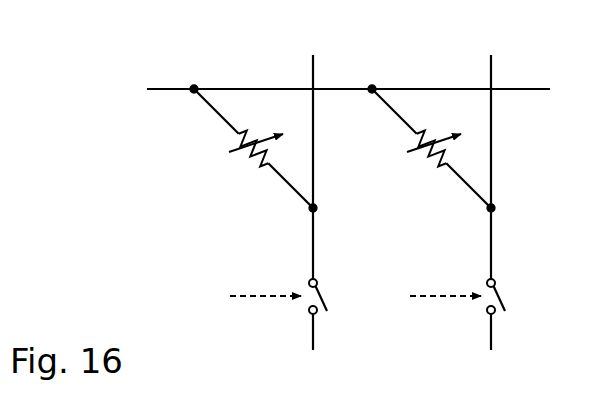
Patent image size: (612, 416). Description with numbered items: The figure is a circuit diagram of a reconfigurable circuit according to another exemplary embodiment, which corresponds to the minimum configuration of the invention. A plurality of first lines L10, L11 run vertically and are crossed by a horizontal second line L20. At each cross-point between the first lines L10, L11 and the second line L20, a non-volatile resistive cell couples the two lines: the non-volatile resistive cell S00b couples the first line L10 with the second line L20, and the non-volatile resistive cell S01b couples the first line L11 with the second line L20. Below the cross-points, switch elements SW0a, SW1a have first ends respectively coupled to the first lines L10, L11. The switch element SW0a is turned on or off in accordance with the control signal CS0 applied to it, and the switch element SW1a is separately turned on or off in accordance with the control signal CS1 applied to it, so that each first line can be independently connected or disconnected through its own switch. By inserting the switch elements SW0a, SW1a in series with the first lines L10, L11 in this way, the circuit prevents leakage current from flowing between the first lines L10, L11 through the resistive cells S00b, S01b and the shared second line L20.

The second line L20 is at (323, 91).
The first line L10 is at (302, 149).
The first line L11 is at (478, 149).
The non-volatile resistive cell S00b is at (244, 148).
The non-volatile resistive cell S01b is at (428, 148).
The control signal CS0 is at (263, 281).
The control signal CS1 is at (442, 281).
The switch element SW0a is at (350, 314).
The switch element SW1a is at (528, 314).